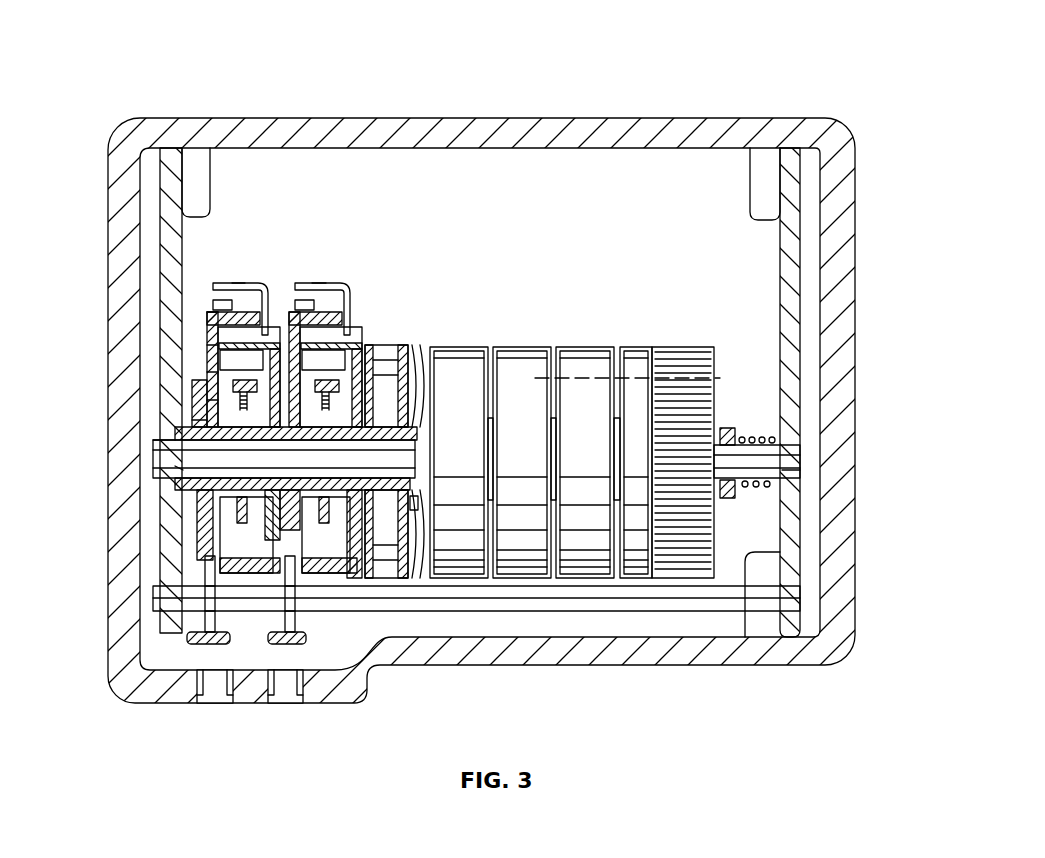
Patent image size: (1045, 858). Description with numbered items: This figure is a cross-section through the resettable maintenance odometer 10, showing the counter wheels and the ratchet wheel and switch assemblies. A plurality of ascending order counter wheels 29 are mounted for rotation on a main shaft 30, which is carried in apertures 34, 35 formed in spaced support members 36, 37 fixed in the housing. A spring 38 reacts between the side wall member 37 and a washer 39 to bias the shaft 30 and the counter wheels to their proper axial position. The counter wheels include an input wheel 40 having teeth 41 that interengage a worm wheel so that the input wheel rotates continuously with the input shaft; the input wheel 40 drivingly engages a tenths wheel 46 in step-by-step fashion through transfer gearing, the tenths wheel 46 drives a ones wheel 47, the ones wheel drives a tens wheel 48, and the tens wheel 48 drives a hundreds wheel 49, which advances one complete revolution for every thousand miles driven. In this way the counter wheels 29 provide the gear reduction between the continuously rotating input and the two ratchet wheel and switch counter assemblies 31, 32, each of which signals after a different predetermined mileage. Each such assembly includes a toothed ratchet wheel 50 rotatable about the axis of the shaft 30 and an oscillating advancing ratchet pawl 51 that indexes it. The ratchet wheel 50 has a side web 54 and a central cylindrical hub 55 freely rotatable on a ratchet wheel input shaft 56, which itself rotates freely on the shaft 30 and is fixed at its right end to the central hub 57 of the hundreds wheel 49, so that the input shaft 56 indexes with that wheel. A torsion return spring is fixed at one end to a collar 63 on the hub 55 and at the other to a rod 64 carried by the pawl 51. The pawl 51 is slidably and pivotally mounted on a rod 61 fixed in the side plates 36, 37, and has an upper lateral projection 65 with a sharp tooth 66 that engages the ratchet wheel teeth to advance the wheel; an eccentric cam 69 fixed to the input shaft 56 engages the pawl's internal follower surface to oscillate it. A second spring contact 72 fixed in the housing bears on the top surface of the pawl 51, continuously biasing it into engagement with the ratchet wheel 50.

The resettable maintenance odometer 10 is at (514, 357).
The counter wheels 29 is at (575, 452).
The main shaft 30 is at (780, 453).
The ratchet wheel and switch counter assembly 31 is at (322, 262).
The ratchet wheel and switch counter assembly 32 is at (238, 260).
The aperture 34 is at (170, 441).
The aperture 35 is at (784, 470).
The support member 36 is at (205, 312).
The support member 37 is at (790, 263).
The spring 38 is at (798, 395).
The washer 39 is at (732, 425).
The input wheel 40 is at (640, 347).
The teeth 41 is at (683, 347).
The 1/10 wheel 46 is at (580, 565).
The ones wheel 47 is at (526, 347).
The tens wheel 48 is at (460, 347).
The hundreds wheel 49 is at (396, 345).
The toothed ratchet wheel 50 is at (207, 345).
The advancing ratchet pawl 51 is at (210, 372).
The side web 54 is at (300, 442).
The central cylindrical hub 55 is at (183, 468).
The ratchet wheel input shaft 56 is at (200, 420).
The central hub 57 is at (412, 502).
The rod 61 is at (445, 592).
The collar 63 is at (230, 495).
The rod 64 is at (210, 400).
The lateral projection 65 is at (240, 312).
The sharp tooth 66 is at (272, 330).
The eccentric cam 69 is at (210, 505).
The second spring contact 72 is at (213, 322).